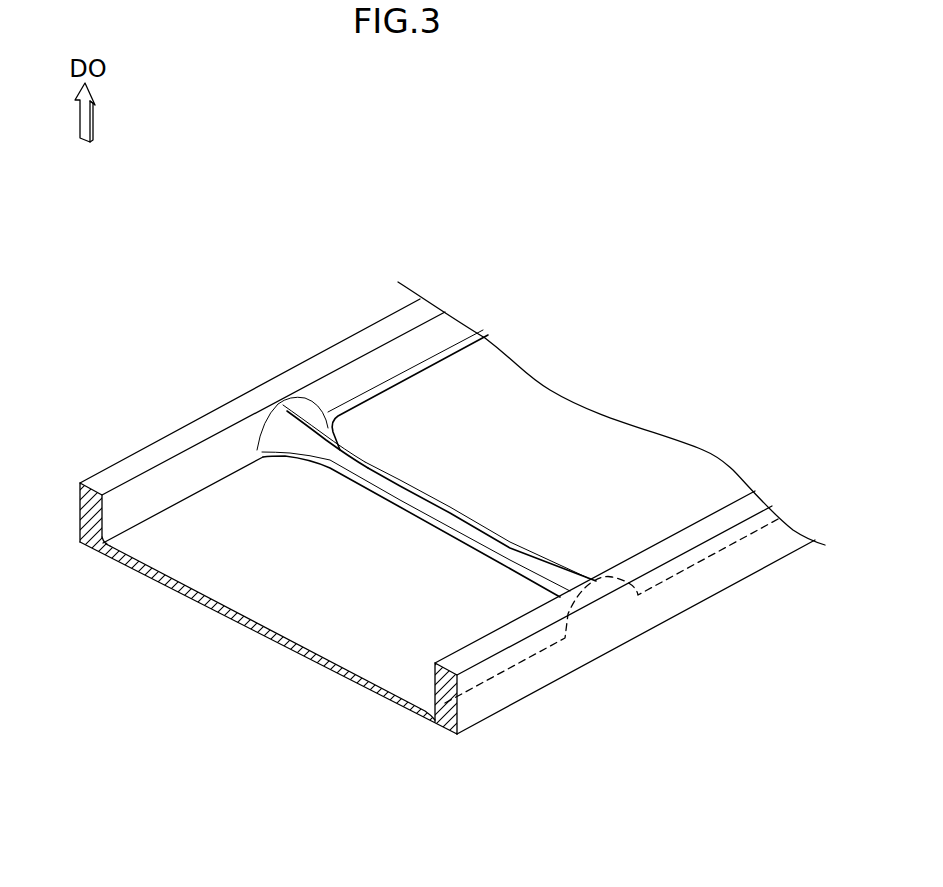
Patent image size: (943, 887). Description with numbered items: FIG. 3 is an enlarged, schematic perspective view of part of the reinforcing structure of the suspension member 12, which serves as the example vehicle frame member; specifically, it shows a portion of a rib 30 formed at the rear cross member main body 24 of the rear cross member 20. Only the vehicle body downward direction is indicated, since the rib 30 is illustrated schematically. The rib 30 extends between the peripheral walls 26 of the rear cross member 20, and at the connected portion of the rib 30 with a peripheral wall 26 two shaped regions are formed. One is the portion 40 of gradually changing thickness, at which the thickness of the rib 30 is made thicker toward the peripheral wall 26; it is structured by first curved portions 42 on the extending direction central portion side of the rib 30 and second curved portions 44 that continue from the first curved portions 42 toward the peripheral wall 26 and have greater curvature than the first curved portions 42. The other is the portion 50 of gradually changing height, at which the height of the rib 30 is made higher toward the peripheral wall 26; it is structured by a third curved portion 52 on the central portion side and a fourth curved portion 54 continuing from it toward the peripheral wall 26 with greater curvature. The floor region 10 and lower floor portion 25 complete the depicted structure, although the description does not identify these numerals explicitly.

The floor panel (raised portion) 10 is at (375, 430).
The suspension member 12 is at (124, 312).
The rear cross member 20 is at (626, 648).
The rear cross member main body 24 is at (720, 590).
The lower floor portion 25 is at (325, 643).
The peripheral wall 26 is at (138, 497).
The rib 30 is at (457, 513).
The portion of gradually changing thickness 40 is at (406, 532).
The first curved portion 42 is at (302, 447).
The second curved portion 44 is at (273, 443).
The portion of gradually changing height 50 is at (271, 345).
The third curved portion 52 is at (323, 415).
The fourth curved portion 54 is at (297, 412).